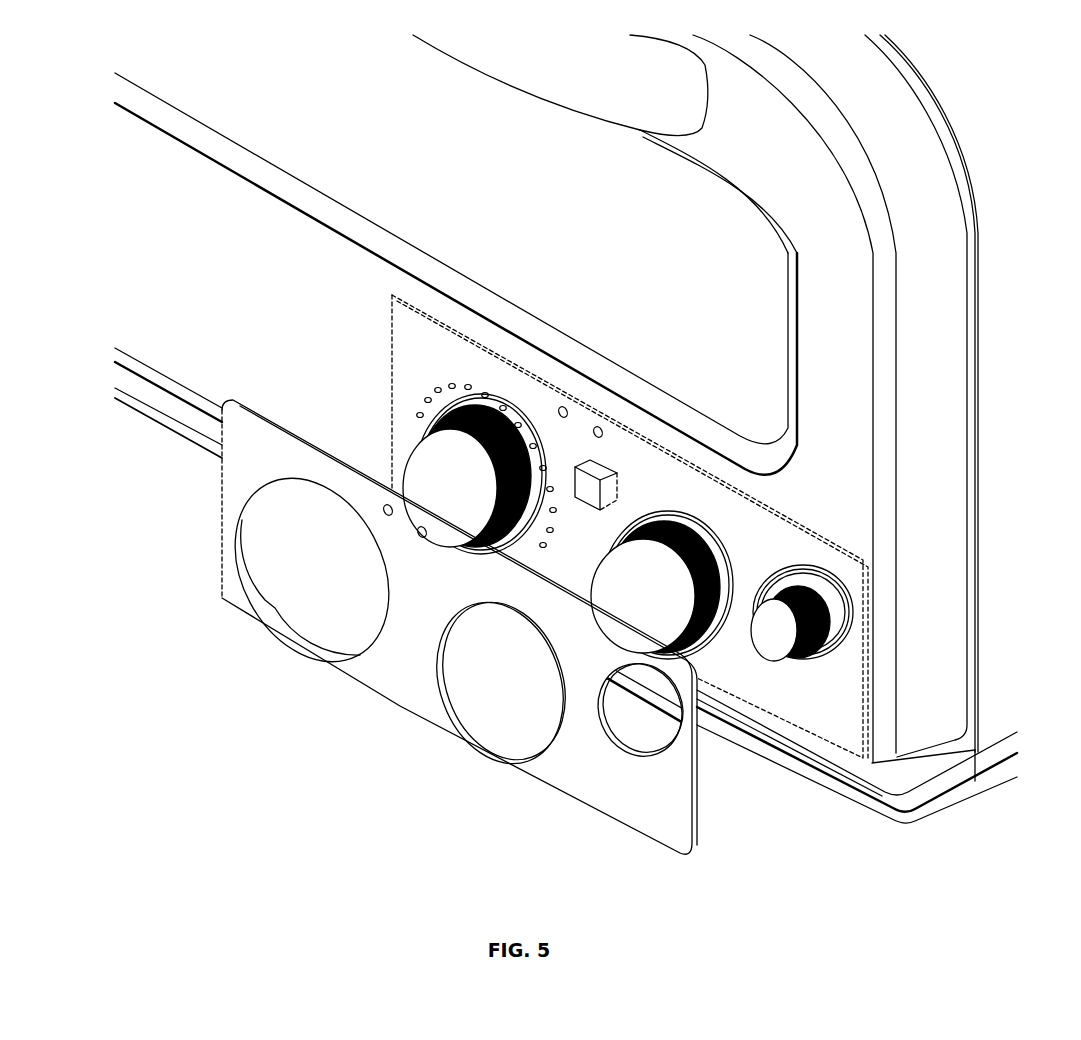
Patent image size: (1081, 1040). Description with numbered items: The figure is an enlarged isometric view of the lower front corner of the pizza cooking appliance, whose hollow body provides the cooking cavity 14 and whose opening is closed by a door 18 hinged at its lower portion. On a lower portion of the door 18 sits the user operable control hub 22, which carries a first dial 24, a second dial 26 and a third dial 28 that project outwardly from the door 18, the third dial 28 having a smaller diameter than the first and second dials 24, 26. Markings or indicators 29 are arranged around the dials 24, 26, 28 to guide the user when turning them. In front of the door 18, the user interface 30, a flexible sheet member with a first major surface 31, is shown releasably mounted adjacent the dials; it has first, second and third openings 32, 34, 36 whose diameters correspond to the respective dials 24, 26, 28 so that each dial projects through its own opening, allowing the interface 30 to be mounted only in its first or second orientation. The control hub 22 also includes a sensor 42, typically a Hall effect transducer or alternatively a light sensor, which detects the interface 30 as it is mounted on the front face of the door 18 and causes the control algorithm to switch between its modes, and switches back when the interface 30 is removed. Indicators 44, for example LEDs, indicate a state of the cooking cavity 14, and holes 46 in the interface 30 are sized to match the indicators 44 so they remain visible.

The cooking cavity 14 is at (424, 174).
The door 18 is at (938, 630).
The control hub 22 is at (852, 733).
The first dial 24 is at (448, 482).
The second dial 26 is at (640, 597).
The third dial 28 is at (770, 630).
The markings or indicators 29 is at (418, 389).
The user interface 30 is at (410, 692).
The first major surface 31 is at (643, 823).
The first opening 32 is at (243, 577).
The second opening 34 is at (482, 746).
The third opening 36 is at (660, 758).
The sensor 42 is at (590, 490).
The indicators 44 is at (600, 428).
The holes 46 is at (403, 488).